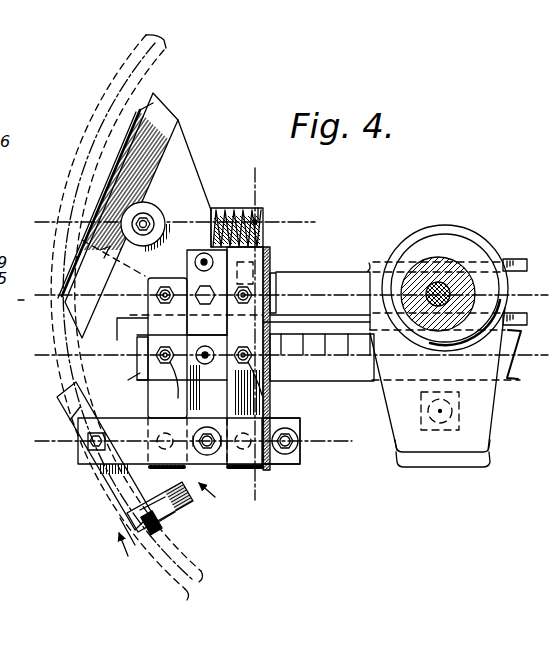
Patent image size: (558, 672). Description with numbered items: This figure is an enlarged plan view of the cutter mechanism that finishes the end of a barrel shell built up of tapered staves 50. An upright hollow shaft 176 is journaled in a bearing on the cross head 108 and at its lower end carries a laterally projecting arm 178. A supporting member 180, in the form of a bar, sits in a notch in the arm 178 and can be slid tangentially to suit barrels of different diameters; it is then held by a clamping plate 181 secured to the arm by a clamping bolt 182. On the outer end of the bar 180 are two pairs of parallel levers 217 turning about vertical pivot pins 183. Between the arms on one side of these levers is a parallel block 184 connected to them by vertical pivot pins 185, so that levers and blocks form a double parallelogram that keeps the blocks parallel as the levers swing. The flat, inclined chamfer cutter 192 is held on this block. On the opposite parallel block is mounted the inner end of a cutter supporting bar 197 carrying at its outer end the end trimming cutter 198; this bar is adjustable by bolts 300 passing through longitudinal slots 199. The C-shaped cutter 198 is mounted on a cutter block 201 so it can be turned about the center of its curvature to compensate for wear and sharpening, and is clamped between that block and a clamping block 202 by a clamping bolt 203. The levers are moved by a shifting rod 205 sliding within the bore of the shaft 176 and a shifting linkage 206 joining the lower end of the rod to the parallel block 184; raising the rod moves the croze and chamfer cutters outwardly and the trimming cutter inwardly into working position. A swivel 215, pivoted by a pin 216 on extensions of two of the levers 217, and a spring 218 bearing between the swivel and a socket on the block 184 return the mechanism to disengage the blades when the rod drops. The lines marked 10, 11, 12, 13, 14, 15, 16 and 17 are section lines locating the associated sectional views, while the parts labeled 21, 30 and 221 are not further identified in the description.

The wheel rim 10 is at (103, 350).
The blade hub 11 is at (80, 240).
The section line 12 is at (171, 527).
The section line 13 is at (52, 222).
The section line 14 is at (45, 322).
The section line 15 is at (45, 386).
The section line 16 is at (47, 472).
The section line 17 is at (287, 175).
The bracket 21 is at (509, 354).
The frame 30 is at (12, 310).
The staves 50 is at (191, 601).
The cross head 108 is at (120, 381).
The upright hollow shaft 176 is at (436, 272).
The laterally projecting arm 178 is at (480, 372).
The supporting member 180 is at (336, 374).
The clamping plate 181 is at (455, 469).
The clamping bolt 182 is at (441, 430).
The pivot pins 183 is at (178, 398).
The parallel block 184 is at (195, 262).
The vertical pivot pins 185 is at (158, 299).
The chamfer cutter 192 is at (170, 120).
The cutter supporting bar 197 is at (189, 442).
The end trimming cutter 198 is at (166, 507).
The longitudinal slots 199 is at (197, 437).
The cutter block 201 is at (108, 491).
The clamping block 202 is at (135, 527).
The clamping bolt 203 is at (148, 535).
The shifting rod 205 is at (436, 302).
The shifting linkage 206 is at (395, 294).
The swivel 215 is at (258, 216).
The pin 216 is at (258, 222).
The parallel levers 217 is at (190, 356).
The spring 218 is at (224, 212).
The end plate 221 is at (273, 276).
The adjusting bolts 300 is at (215, 448).